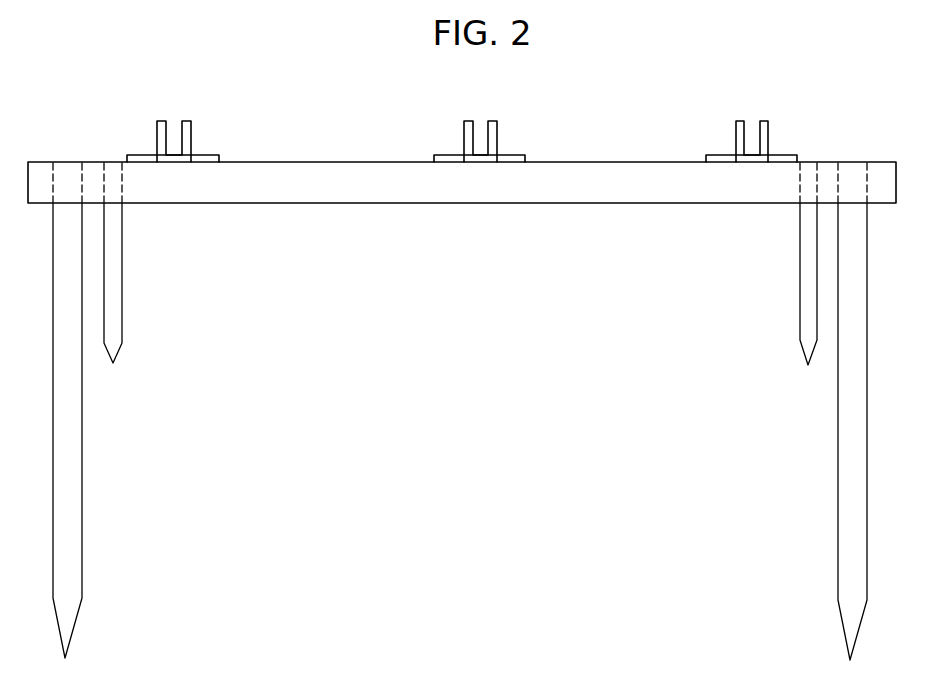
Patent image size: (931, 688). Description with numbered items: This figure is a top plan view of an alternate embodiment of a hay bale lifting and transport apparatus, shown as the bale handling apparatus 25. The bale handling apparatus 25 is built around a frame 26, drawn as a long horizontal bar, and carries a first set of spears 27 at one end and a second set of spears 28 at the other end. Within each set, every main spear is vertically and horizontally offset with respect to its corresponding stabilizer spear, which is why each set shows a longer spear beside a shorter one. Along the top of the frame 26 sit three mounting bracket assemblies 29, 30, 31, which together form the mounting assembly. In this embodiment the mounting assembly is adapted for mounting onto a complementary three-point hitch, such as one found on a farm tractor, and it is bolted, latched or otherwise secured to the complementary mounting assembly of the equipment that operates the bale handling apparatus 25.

The bale handling apparatus 25 is at (640, 128).
The frame 26 is at (399, 200).
The first set of spears 27 is at (140, 344).
The second set of spears 28 is at (776, 360).
The mounting bracket assembly 29 is at (471, 112).
The mounting bracket assembly 30 is at (170, 117).
The mounting bracket assembly 31 is at (751, 112).